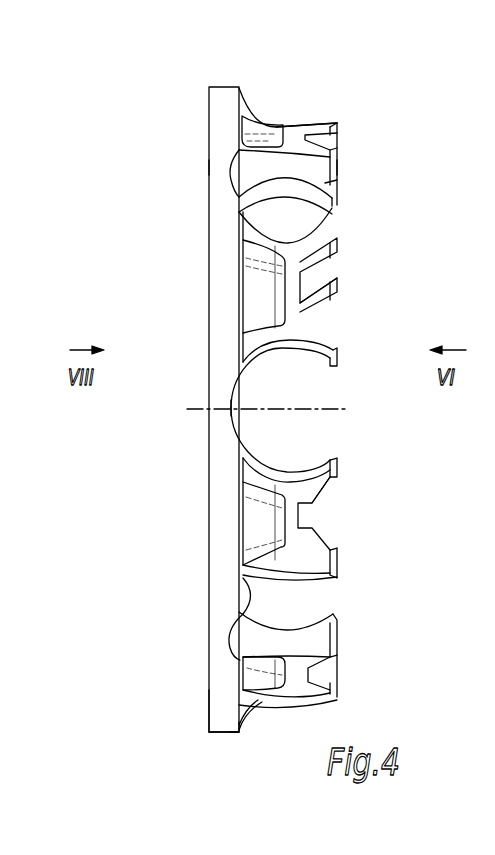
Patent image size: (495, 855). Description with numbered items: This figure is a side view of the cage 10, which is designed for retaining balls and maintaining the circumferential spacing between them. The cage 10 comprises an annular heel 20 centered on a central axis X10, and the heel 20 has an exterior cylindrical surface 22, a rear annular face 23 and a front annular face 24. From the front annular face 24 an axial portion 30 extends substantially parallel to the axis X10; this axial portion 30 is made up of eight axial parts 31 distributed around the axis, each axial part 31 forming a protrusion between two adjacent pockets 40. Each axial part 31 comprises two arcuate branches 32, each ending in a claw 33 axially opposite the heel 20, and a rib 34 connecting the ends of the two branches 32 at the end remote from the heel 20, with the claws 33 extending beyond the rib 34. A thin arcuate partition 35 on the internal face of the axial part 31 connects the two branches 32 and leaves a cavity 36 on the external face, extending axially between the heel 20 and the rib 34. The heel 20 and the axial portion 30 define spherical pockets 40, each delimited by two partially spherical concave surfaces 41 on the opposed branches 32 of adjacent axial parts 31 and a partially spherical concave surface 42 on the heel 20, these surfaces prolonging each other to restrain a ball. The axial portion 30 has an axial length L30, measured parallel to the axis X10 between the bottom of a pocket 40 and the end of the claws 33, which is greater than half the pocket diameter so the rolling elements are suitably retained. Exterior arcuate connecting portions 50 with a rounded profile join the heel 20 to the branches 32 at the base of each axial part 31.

The cage 10 is at (136, 96).
The annular heel 20 is at (222, 88).
The exterior cylindrical surface 22 is at (220, 736).
The rear annular face 23 is at (206, 707).
The front annular face 24 is at (242, 725).
The axial portion 30 is at (309, 68).
The axial part 31 is at (357, 86).
The arcuate branch 32 is at (300, 127).
The claw 33 is at (334, 121).
The rib 34 is at (305, 138).
The arcuate partition 35 is at (272, 140).
The cavity 36 is at (254, 126).
The axial length of axial portion L30 is at (214, 167).
The pocket 40 is at (340, 392).
The partially spherical concave surface 41 is at (289, 350).
The partially spherical concave surface 42 is at (240, 421).
The central axis X10 is at (249, 409).
The exterior arcuate connecting portion 50 is at (255, 580).